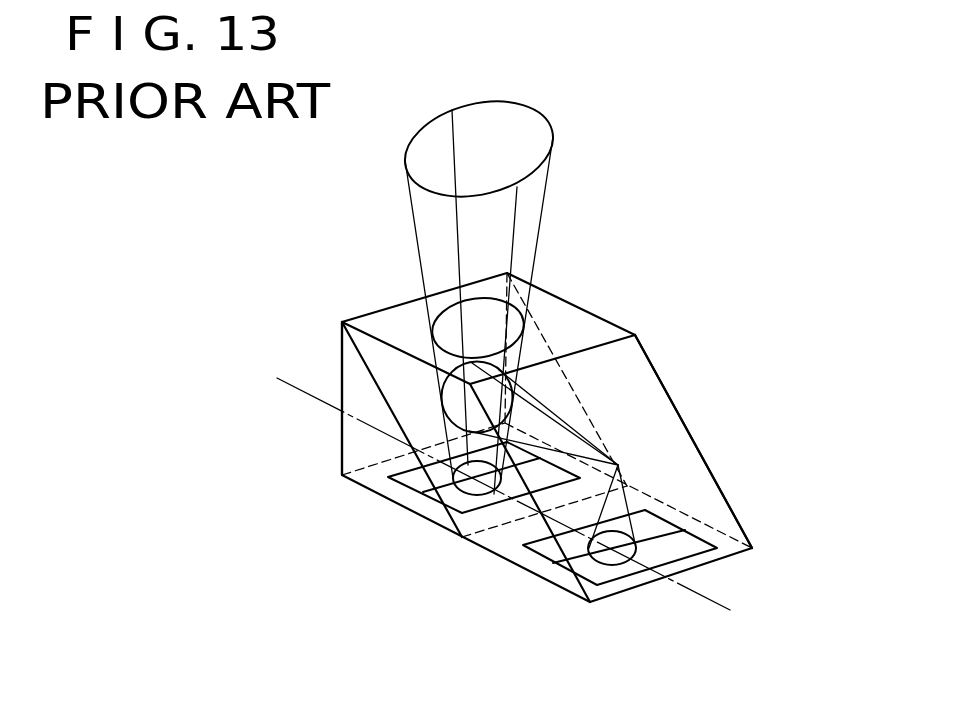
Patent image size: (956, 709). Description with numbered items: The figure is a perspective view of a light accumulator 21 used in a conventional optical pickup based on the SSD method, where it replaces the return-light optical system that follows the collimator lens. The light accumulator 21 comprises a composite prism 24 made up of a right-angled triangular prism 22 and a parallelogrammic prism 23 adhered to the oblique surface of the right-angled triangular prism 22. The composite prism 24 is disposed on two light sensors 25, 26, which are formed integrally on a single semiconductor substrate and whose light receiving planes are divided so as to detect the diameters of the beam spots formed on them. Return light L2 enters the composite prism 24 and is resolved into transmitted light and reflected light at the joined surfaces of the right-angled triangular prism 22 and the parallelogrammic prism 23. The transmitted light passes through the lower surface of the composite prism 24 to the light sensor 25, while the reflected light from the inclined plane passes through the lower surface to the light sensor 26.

The light accumulator 21 is at (300, 514).
The right-angled triangular prism 22 is at (342, 358).
The parallelogrammic prism 23 is at (666, 414).
The composite prism 24 is at (654, 298).
The light sensor 25 is at (440, 505).
The light sensor 26 is at (556, 558).
The return light L2 is at (543, 208).